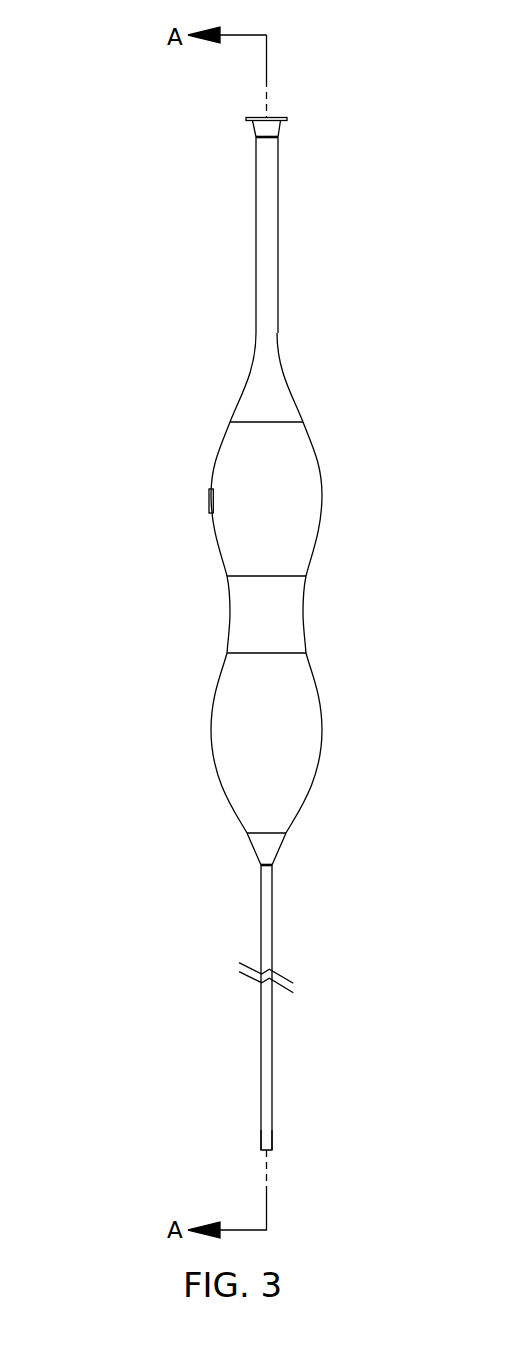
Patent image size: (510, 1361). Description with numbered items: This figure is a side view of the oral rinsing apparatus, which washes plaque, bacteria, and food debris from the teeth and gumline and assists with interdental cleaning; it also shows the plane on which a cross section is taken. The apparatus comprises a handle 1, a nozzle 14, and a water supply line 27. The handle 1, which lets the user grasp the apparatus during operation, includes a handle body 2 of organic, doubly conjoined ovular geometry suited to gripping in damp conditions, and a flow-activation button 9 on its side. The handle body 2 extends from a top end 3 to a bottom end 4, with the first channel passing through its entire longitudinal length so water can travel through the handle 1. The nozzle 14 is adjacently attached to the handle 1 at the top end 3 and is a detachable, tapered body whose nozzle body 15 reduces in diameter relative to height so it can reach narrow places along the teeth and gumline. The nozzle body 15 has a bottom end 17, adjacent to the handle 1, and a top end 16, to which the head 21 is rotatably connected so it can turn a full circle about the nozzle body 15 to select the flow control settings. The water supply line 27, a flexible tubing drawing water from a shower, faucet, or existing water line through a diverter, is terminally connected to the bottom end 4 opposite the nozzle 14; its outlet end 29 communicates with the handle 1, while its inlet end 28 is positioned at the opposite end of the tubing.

The handle 1 is at (120, 662).
The nozzle 14 is at (133, 250).
The head 21 is at (278, 128).
The top end of the nozzle body 16 is at (251, 143).
The nozzle body 15 is at (278, 242).
The bottom end of the nozzle body 17 is at (302, 397).
The top end of the handle body 3 is at (212, 429).
The flow-activation button 9 is at (210, 514).
The handle body 2 is at (297, 613).
The bottom end of the handle body 4 is at (228, 823).
The outlet end 29 is at (282, 871).
The water supply line 27 is at (266, 1068).
The inlet end 28 is at (248, 1128).